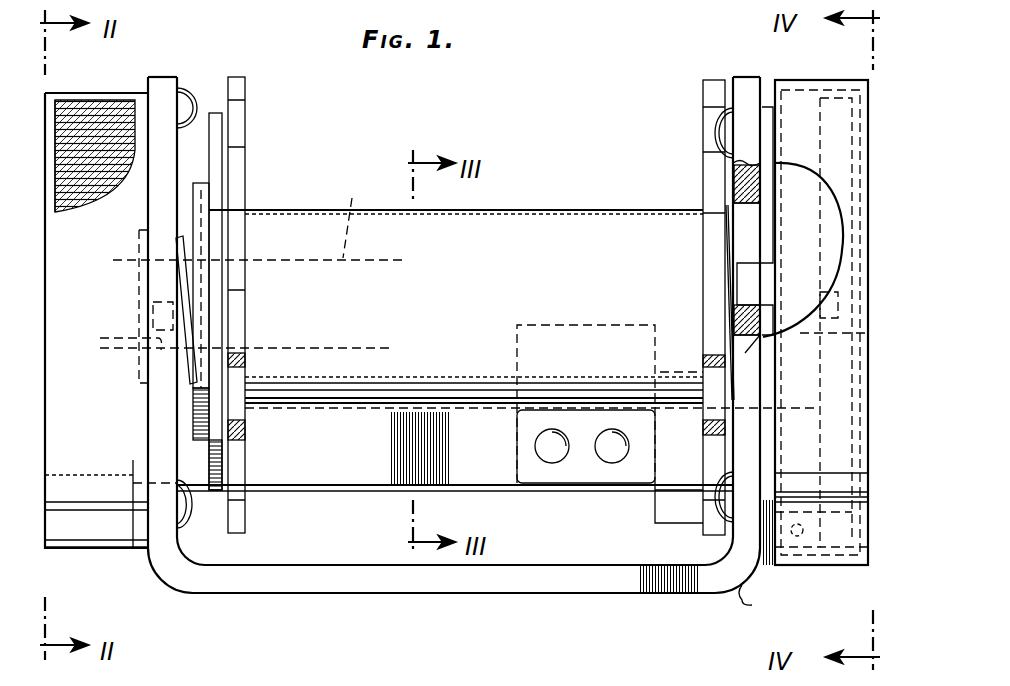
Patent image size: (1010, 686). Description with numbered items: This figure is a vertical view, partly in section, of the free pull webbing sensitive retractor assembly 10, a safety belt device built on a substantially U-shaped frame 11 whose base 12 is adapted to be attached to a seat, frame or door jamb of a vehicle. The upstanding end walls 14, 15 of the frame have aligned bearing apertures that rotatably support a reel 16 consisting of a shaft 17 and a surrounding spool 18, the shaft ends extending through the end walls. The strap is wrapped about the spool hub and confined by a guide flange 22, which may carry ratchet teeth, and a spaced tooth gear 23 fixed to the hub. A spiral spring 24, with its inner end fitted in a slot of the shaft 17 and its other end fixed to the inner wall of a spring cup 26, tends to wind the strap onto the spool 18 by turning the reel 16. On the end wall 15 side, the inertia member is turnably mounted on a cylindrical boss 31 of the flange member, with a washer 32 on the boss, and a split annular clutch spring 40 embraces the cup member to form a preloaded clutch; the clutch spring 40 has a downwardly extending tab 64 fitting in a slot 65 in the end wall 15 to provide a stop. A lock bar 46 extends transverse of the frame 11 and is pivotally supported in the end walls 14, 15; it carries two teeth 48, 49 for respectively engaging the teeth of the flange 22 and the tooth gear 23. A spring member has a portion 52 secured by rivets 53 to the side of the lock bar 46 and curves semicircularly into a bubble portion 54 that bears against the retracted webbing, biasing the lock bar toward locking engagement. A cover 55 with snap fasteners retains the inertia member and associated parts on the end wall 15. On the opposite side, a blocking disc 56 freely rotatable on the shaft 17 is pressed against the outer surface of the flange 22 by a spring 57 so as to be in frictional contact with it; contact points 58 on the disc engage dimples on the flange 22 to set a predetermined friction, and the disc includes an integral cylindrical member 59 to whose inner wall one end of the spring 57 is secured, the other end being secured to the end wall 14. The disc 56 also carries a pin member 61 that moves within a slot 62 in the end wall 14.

The free pull webbing sensitive retractor assembly 10 is at (878, 275).
The U-shaped frame 11 is at (760, 601).
The base 12 is at (495, 580).
The end wall 14 is at (165, 86).
The end wall 15 is at (748, 85).
The reel 16 is at (625, 208).
The shaft 17 is at (367, 220).
The spool 18 is at (275, 210).
The guide flange 22 is at (247, 120).
The tooth gear 23 is at (712, 120).
The spiral spring 24 is at (95, 125).
The spring cup 26 is at (95, 550).
The cylindrical boss 31 is at (838, 315).
The washer 32 is at (860, 334).
The clutch spring 40 is at (805, 184).
The lock bar 46 is at (310, 472).
The tooth 48 is at (194, 400).
The tooth 49 is at (698, 370).
The portion 52 is at (540, 470).
The rivets 53 is at (605, 446).
The bubble portion 54 is at (595, 346).
The cover 55 is at (834, 390).
The blocking disc 56 is at (216, 113).
The spring 57 is at (176, 242).
The contact points 58 is at (222, 490).
The cylindrical member 59 is at (201, 183).
The pin member 61 is at (148, 306).
The slot 62 is at (115, 306).
The tab 64 is at (745, 276).
The slot 65 is at (763, 220).